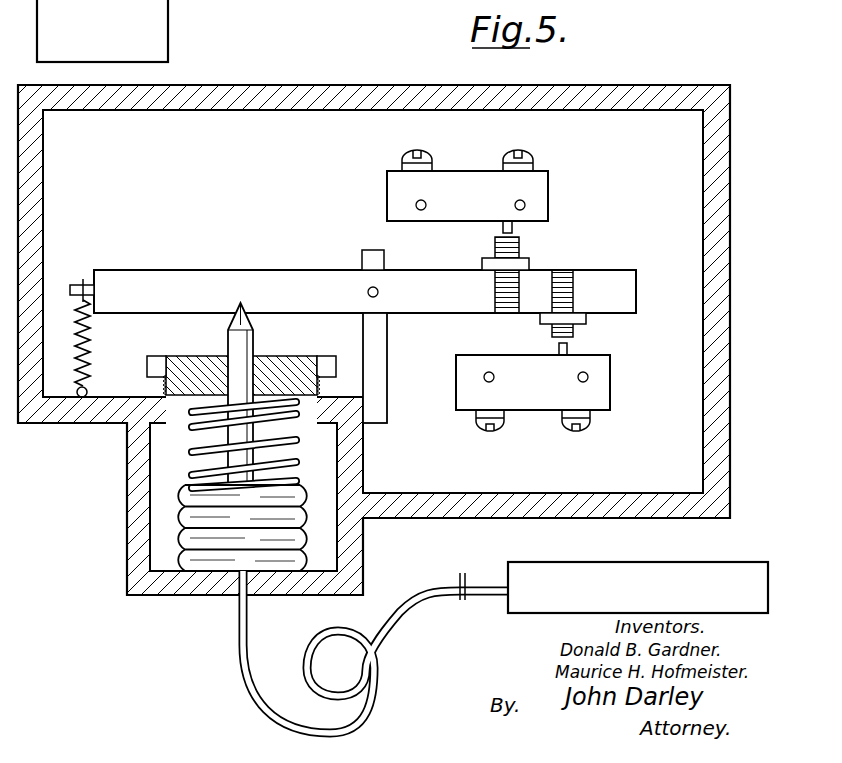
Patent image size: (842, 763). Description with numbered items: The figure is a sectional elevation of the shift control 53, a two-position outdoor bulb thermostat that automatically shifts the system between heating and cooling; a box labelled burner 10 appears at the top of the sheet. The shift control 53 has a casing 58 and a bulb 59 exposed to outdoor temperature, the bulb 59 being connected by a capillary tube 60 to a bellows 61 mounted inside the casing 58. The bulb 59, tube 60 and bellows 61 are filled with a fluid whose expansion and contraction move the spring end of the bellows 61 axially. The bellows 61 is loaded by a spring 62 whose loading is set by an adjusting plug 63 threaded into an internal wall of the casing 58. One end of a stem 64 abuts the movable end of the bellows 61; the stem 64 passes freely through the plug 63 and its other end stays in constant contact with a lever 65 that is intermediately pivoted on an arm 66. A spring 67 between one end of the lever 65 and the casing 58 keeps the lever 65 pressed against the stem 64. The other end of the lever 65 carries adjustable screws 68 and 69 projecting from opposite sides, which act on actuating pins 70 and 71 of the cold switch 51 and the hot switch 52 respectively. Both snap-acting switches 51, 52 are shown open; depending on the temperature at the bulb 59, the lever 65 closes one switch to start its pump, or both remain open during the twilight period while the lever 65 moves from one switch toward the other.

The burner 10 is at (168, 24).
The shift control 53 is at (337, 84).
The casing 58 is at (656, 162).
The hot switch 52 is at (548, 184).
The actuating pin 71 is at (512, 229).
The adjustable screw 69 is at (520, 244).
The lever 65 is at (240, 266).
The spring 67 is at (85, 352).
The adjusting plug 63 is at (176, 356).
The stem 64 is at (250, 341).
The arm 66 is at (381, 343).
The adjustable screw 68 is at (573, 334).
The actuating pin 70 is at (567, 350).
The cold switch 51 is at (608, 397).
The spring 62 is at (190, 452).
The bellows 61 is at (185, 519).
The capillary tube 60 is at (419, 588).
The bulb 59 is at (630, 598).